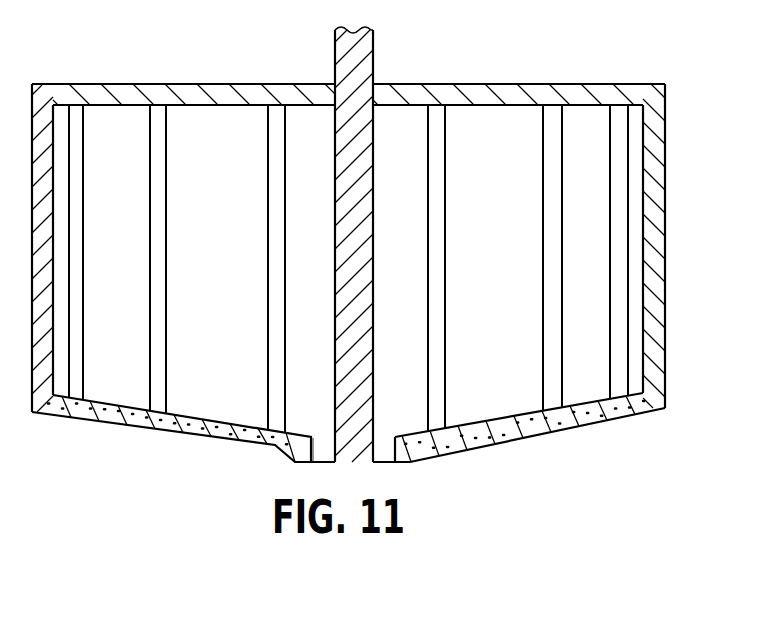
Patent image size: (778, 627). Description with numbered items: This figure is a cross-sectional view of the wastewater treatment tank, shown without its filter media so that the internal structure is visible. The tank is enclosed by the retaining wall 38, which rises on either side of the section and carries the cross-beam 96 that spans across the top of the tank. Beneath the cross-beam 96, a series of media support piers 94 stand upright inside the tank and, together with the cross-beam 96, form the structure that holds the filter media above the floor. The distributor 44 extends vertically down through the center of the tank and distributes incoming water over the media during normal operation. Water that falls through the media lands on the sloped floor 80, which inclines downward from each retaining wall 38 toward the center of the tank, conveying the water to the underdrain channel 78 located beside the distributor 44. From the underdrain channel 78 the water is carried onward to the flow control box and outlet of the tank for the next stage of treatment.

The retaining wall 38 is at (667, 200).
The distributor 44 is at (362, 62).
The underdrain channel 78 is at (322, 440).
The sloped floor 80 is at (194, 418).
The media support piers 94 is at (542, 194).
The cross-beam 96 is at (545, 92).